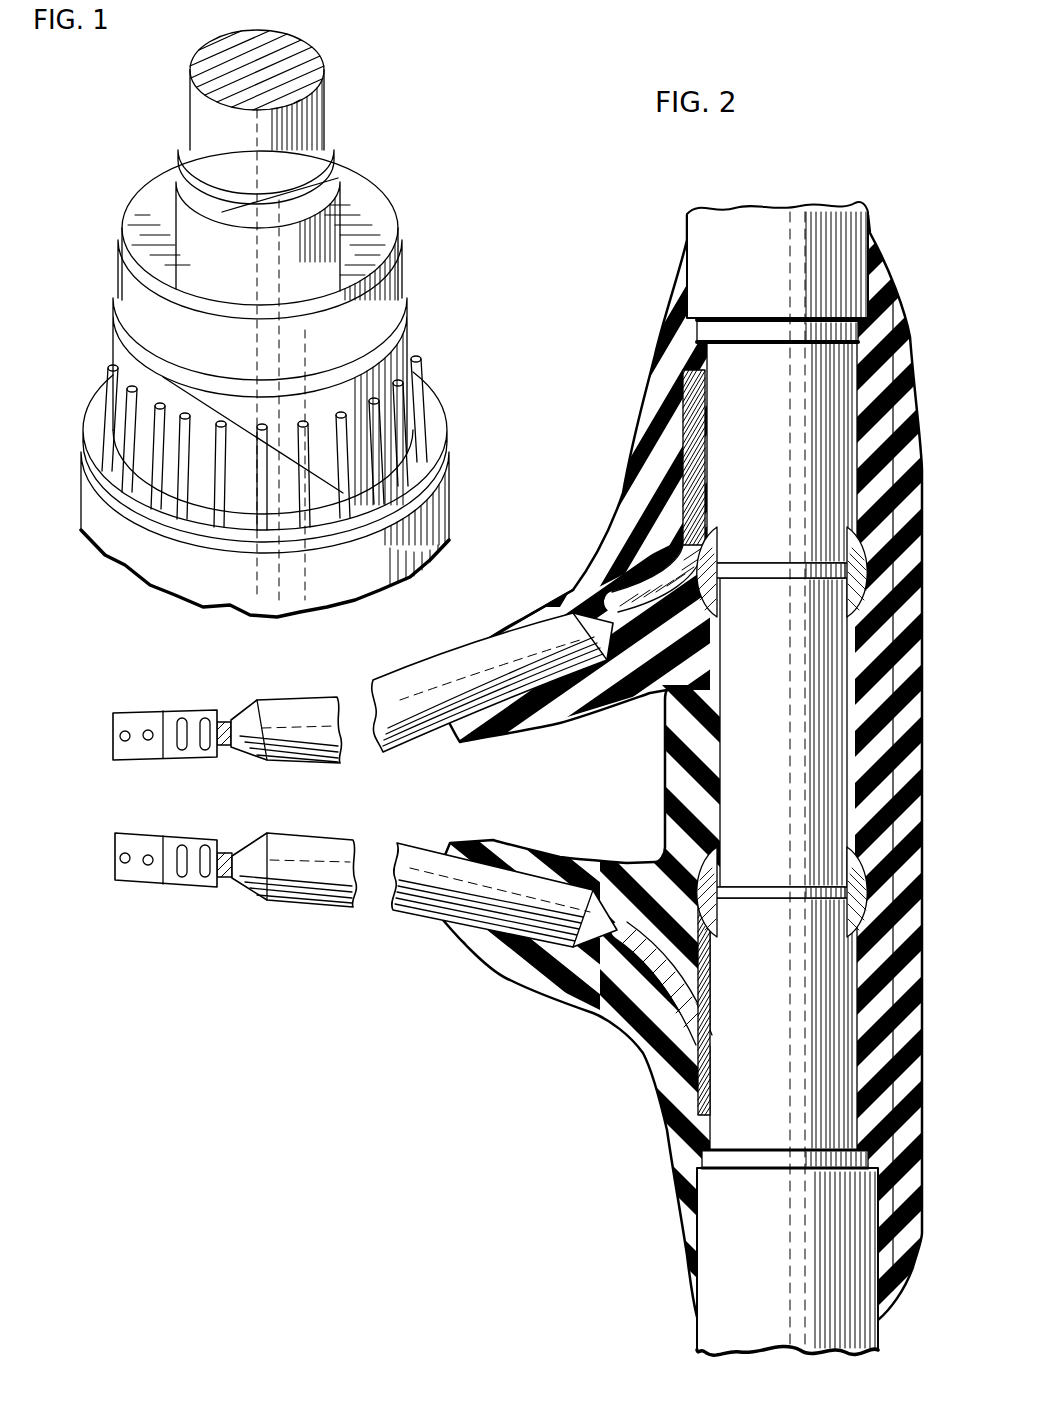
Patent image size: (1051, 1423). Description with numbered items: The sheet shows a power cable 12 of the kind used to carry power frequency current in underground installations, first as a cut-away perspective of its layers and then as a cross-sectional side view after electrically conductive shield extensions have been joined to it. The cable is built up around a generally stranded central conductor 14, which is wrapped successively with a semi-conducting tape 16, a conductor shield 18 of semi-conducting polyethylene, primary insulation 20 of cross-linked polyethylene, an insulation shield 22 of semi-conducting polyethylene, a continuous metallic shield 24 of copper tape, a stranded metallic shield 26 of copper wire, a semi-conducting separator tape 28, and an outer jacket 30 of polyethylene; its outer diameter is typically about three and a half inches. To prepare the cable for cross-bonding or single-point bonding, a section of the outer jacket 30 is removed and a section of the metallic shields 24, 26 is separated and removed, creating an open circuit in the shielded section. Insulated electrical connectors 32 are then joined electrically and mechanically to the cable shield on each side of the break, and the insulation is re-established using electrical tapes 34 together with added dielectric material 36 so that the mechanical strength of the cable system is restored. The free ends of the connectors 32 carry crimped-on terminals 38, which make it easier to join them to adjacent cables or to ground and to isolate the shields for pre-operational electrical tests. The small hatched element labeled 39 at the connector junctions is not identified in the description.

In FIG. 1, the power cable 12 is at (332, 40).
In FIG. 1, the central conductor 14 is at (312, 128).
In FIG. 1, the semi-conducting tape 16 is at (320, 182).
In FIG. 1, the conductor shield 18 is at (280, 201).
In FIG. 1, the primary insulation 20 is at (403, 243).
In FIG. 2, the primary insulation 20 is at (733, 723).
In FIG. 1, the insulation shield 22 is at (403, 300).
In FIG. 2, the insulation shield 22 is at (750, 570).
In FIG. 1, the continuous metallic shield 24 is at (407, 345).
In FIG. 2, the continuous metallic shield 24 is at (727, 427).
In FIG. 1, the stranded metallic shield 26 is at (422, 403).
In FIG. 1, the semi-conducting separator tape 28 is at (420, 470).
In FIG. 2, the semi-conducting separator tape 28 is at (707, 333).
In FIG. 1, the outer jacket 30 is at (428, 521).
In FIG. 2, the outer jacket 30 is at (700, 226).
In FIG. 2, the insulated electrical connectors 32 is at (313, 700).
In FIG. 2, the electrical tapes 34 is at (527, 612).
In FIG. 2, the dielectric material 36 is at (687, 795).
In FIG. 2, the crimped-on terminals 38 is at (128, 716).
In FIG. 2, the conductive wire 39 is at (643, 503).